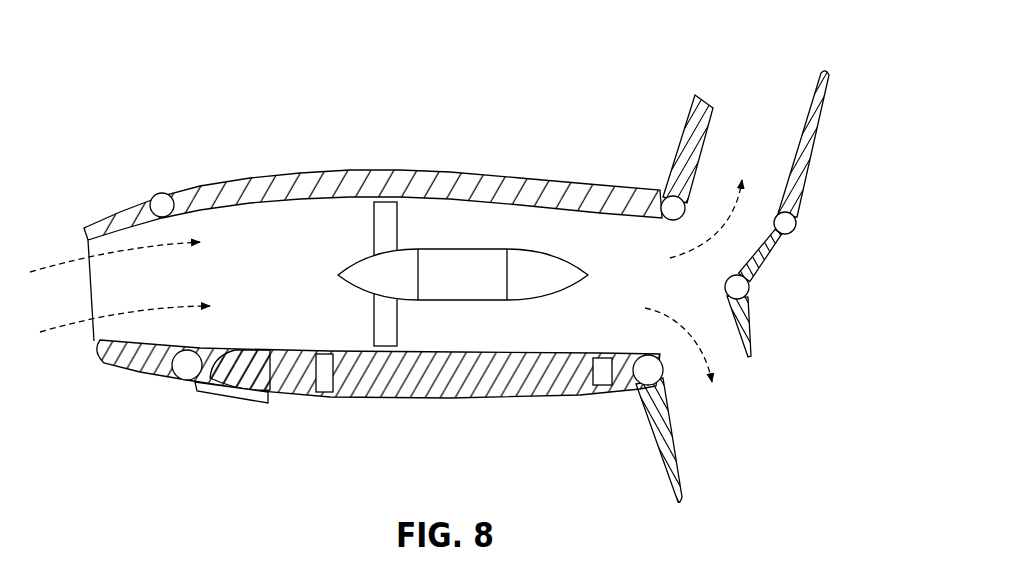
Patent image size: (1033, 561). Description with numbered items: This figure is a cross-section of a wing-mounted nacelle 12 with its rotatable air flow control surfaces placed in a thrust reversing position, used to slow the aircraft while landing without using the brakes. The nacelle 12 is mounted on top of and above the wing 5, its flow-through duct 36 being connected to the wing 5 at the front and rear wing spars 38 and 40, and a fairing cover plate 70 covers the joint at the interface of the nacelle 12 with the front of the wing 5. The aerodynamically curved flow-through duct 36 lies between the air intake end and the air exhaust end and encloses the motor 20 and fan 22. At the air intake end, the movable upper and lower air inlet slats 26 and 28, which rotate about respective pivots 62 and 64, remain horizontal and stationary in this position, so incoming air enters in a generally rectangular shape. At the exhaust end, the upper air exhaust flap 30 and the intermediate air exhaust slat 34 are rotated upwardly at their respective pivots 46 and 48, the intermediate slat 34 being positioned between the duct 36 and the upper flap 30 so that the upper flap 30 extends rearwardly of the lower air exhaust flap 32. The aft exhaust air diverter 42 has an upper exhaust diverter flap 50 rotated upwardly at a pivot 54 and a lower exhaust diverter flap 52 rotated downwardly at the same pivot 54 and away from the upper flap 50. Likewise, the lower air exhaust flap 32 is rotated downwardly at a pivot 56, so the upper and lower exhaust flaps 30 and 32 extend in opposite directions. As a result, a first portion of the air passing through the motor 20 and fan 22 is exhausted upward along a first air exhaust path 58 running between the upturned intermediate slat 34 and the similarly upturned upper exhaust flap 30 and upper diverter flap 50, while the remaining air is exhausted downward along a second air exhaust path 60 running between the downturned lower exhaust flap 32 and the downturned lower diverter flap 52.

The wing 5 is at (458, 397).
The nacelle 12 is at (556, 167).
The motor 20 is at (458, 265).
The fan 22 is at (387, 216).
The upper air inlet slat 26 is at (108, 210).
The lower air inlet slat 28 is at (130, 372).
The upper air exhaust flap 30 is at (815, 147).
The lower air exhaust flap 32 is at (670, 447).
The intermediate air exhaust slat 34 is at (705, 110).
The flow-through duct 36 is at (258, 185).
The front wing spar 38 is at (325, 392).
The rear wing spar 40 is at (612, 380).
The aft exhaust air diverter 42 is at (752, 299).
The pivot 46 is at (796, 229).
The pivot 48 is at (683, 212).
The upper exhaust diverter flap 50 is at (760, 263).
The lower exhaust diverter flap 52 is at (748, 333).
The pivot 54 is at (726, 284).
The pivot 56 is at (662, 352).
The first air exhaust path 58 is at (680, 257).
The second air exhaust path 60 is at (720, 350).
The pivot 62 is at (157, 192).
The pivot 64 is at (185, 378).
The fairing cover plate 70 is at (233, 398).